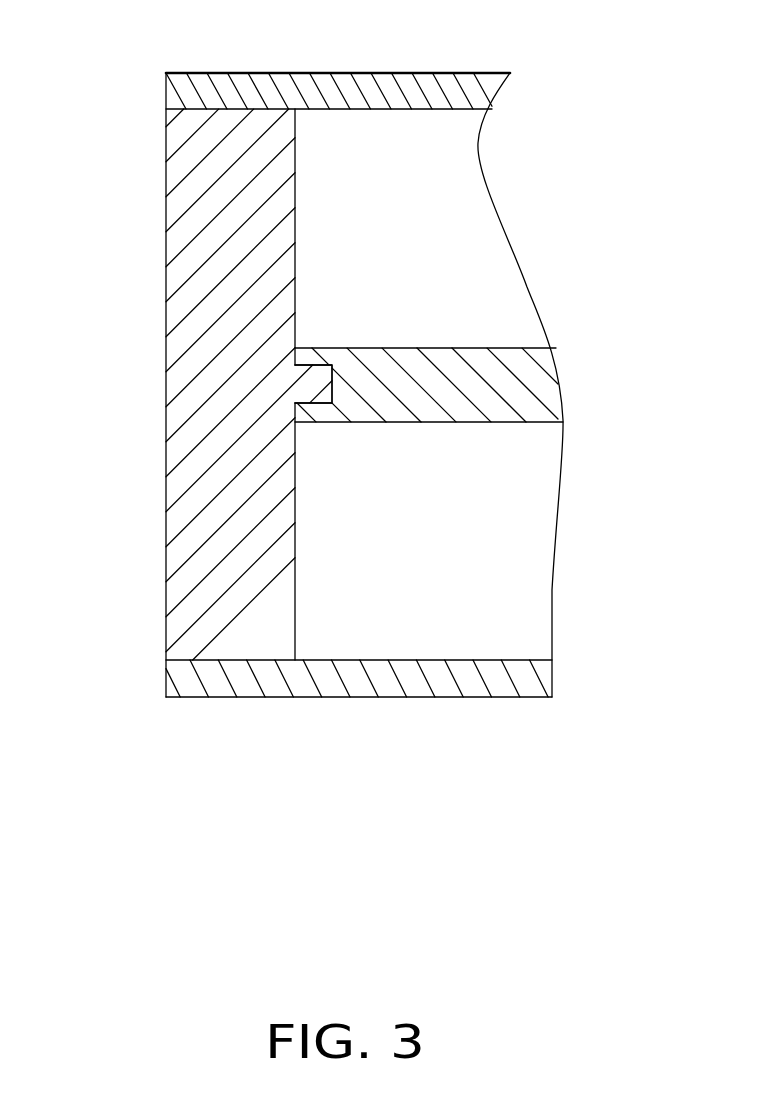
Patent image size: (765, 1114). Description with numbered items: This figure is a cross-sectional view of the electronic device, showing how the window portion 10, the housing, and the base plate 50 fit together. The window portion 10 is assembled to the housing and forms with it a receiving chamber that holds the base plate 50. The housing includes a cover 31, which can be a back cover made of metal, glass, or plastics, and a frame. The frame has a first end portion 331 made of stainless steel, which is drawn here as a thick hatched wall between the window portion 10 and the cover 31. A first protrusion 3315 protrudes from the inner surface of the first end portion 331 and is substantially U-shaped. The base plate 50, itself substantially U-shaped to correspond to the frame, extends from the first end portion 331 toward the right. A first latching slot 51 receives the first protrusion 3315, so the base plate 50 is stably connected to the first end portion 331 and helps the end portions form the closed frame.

The window portion 10 is at (348, 87).
The cover 31 is at (333, 687).
The first end portion 331 is at (202, 287).
The first protrusion 3315 is at (320, 379).
The base plate 50 is at (447, 363).
The first latching slot 51 is at (310, 391).